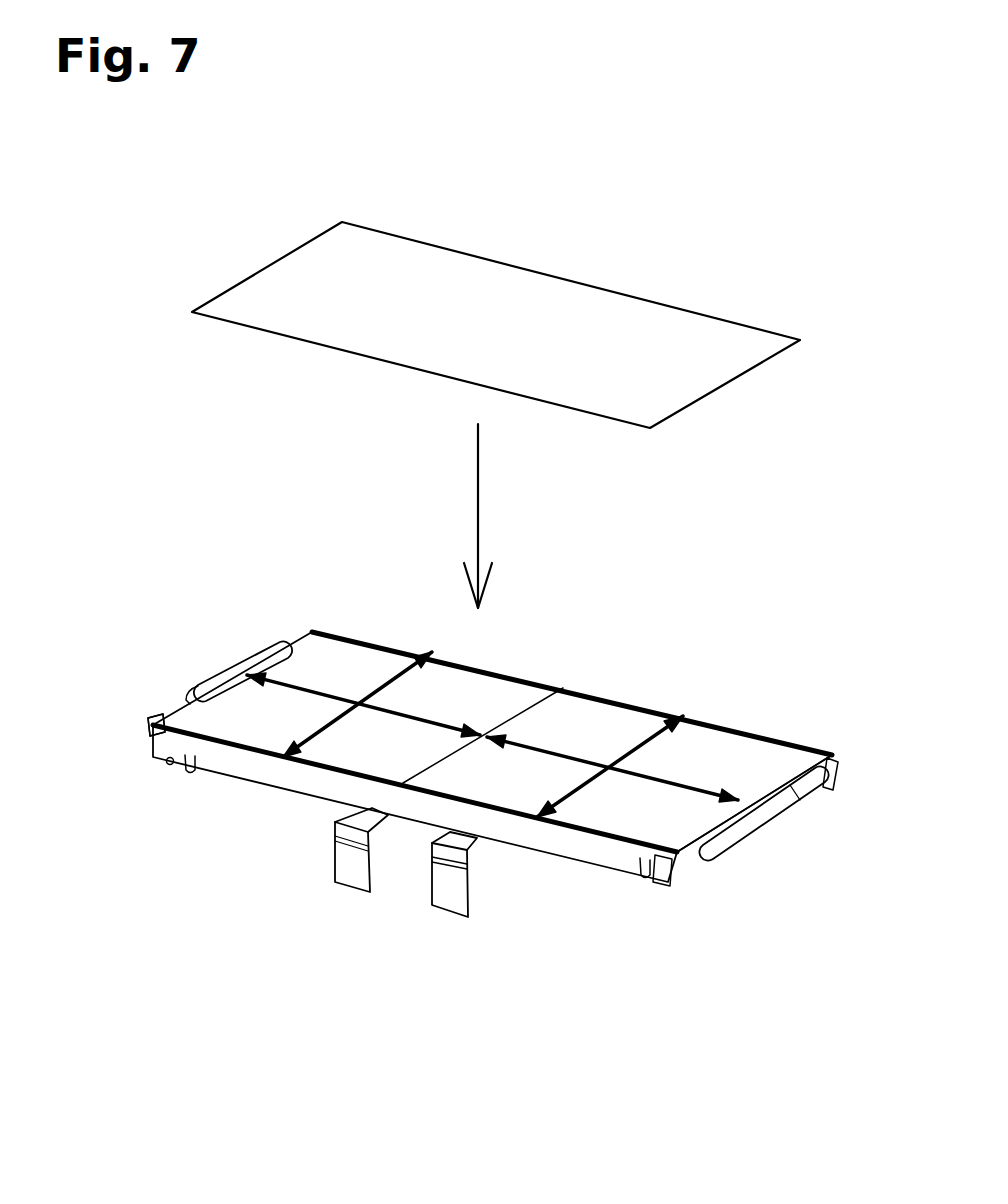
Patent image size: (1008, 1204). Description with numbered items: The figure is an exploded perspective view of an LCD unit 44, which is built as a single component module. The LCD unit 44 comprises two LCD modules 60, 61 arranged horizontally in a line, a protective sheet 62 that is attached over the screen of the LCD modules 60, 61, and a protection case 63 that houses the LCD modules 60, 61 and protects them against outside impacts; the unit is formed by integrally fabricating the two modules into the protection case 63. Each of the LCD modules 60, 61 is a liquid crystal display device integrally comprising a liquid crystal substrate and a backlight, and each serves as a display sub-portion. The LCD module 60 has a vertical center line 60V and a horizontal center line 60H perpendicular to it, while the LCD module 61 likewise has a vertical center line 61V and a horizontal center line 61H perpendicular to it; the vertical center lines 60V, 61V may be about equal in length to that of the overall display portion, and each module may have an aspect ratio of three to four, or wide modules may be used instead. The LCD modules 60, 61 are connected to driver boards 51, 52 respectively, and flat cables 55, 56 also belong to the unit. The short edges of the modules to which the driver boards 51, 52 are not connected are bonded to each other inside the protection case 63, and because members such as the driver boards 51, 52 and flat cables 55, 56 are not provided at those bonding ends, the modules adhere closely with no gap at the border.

The LCD unit 44 is at (162, 860).
The driver board 51 is at (772, 812).
The driver board 52 is at (247, 663).
The flat cable 55 is at (473, 903).
The flat cable 56 is at (348, 887).
The LCD module 60 is at (709, 760).
The horizontal center line 60H is at (582, 760).
The vertical center line 60V is at (572, 795).
The LCD module 61 is at (365, 673).
The horizontal center line 61H is at (433, 722).
The vertical center line 61V is at (330, 718).
The protective sheet 62 is at (730, 344).
The protection case 63 is at (150, 742).